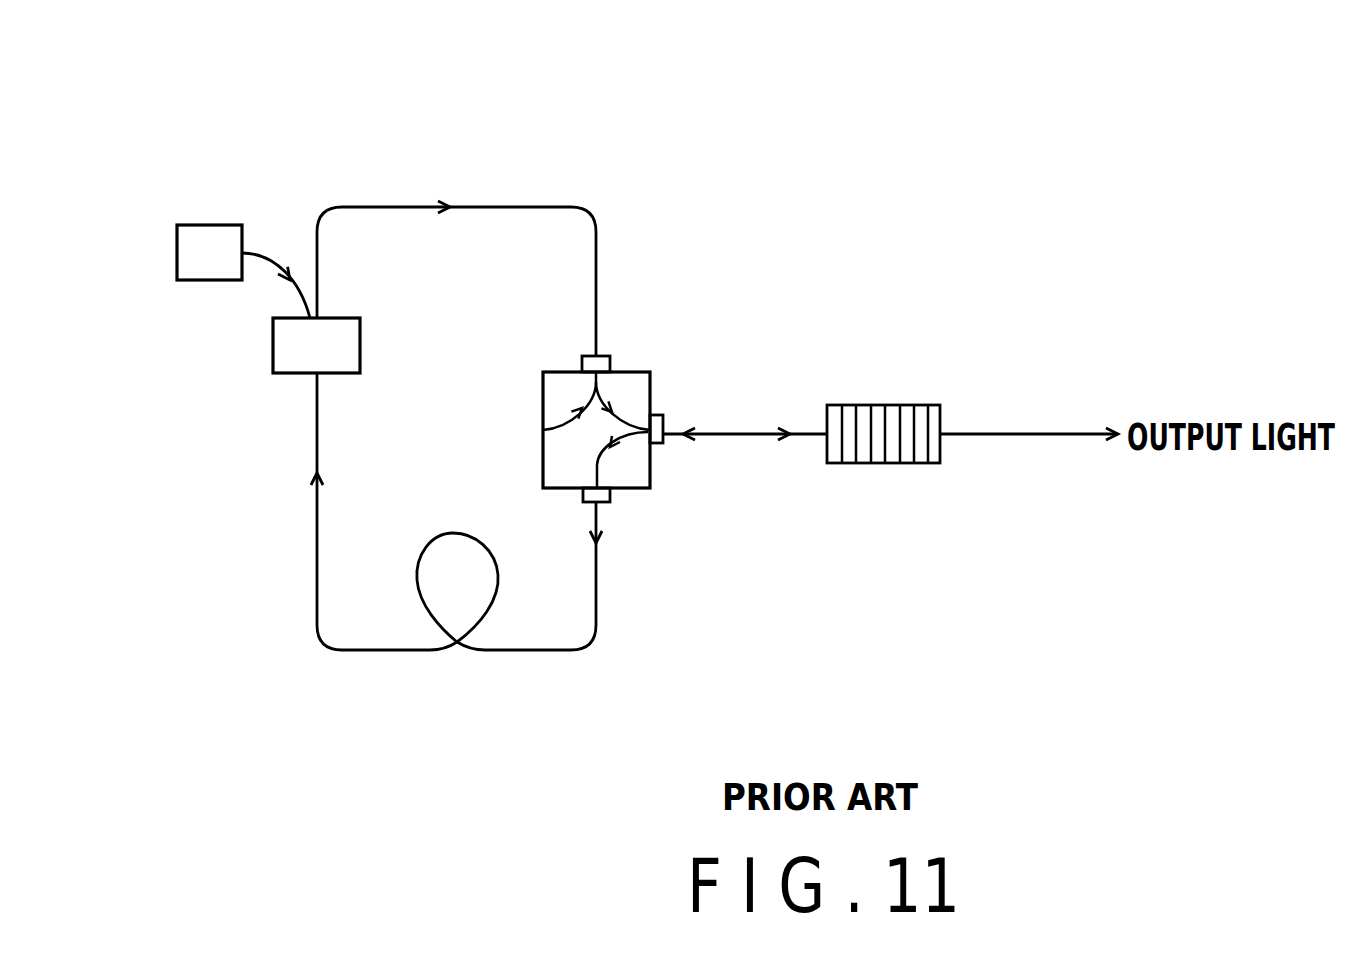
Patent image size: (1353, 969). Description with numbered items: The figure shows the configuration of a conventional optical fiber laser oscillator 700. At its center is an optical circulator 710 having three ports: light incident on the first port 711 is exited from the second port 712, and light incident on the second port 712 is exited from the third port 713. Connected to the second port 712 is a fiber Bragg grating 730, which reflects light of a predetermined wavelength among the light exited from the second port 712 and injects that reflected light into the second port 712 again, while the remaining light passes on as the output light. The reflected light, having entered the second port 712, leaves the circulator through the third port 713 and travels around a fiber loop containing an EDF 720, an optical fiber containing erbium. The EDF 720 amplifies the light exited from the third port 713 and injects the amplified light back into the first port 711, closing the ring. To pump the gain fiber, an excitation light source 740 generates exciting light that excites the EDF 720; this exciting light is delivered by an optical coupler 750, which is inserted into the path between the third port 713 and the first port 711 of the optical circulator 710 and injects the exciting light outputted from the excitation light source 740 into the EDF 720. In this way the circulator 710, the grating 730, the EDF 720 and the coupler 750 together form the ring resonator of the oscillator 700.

The optical fiber laser oscillator 700 is at (133, 46).
The optical circulator 710 is at (630, 372).
The first port 711 is at (583, 362).
The second port 712 is at (655, 415).
The third port 713 is at (604, 503).
The EDF 720 is at (455, 532).
The fiber Bragg grating 730 is at (890, 405).
The excitation light source 740 is at (210, 225).
The optical coupler 750 is at (273, 342).